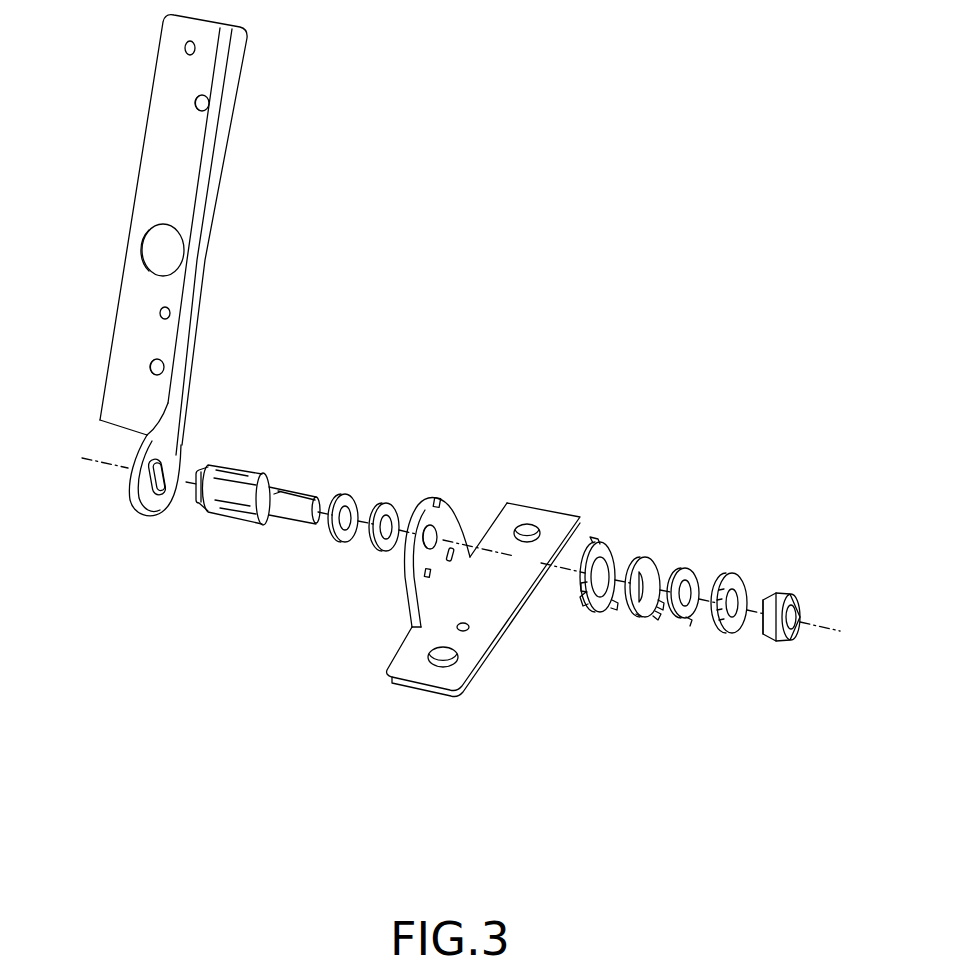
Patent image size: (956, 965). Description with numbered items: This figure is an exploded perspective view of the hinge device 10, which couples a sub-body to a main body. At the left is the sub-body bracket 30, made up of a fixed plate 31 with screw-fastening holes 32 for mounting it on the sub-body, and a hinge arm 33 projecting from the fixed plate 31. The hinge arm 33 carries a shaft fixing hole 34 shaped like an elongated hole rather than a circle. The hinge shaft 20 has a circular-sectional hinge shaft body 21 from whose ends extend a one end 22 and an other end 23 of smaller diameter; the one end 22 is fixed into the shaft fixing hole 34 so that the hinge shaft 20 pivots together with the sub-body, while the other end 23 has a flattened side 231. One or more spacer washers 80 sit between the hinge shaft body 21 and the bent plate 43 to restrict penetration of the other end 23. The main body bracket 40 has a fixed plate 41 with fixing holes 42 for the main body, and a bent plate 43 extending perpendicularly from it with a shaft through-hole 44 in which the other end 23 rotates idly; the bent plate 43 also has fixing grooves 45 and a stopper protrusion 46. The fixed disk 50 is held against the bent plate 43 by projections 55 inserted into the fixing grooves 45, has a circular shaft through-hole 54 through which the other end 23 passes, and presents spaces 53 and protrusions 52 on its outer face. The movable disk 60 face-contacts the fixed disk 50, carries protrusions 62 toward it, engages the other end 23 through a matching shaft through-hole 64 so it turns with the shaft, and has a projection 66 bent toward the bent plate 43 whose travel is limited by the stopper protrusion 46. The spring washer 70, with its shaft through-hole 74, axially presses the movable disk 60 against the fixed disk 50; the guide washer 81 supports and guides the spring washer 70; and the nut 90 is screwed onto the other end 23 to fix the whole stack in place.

The hinge device 10 is at (541, 345).
The hinge shaft 20 is at (220, 508).
The hinge shaft body 21 is at (232, 523).
The one end of hinge shaft 22 is at (197, 507).
The other end of hinge shaft 23 is at (289, 534).
The flattened side 231 is at (295, 508).
The sub-body bracket 30 is at (153, 301).
The fixed plate 31 is at (110, 417).
The screw-fastening hole 32 is at (194, 101).
The hinge arm 33 is at (150, 510).
The shaft fixing hole 34 is at (147, 495).
The main body bracket 40 is at (460, 610).
The fixed plate 41 is at (453, 686).
The fixing hole 42 is at (525, 526).
The bent plate 43 is at (426, 574).
The shaft through-hole 44 is at (436, 538).
The fixing groove 45 is at (433, 497).
The stopper protrusion 46 is at (455, 560).
The fixed disk 50 is at (593, 622).
The protrusion 52 is at (579, 604).
The space 53 is at (581, 593).
The shaft through-hole 54 is at (611, 608).
The projection 55 is at (580, 548).
The movable disk 60 is at (660, 619).
The protrusion 62 is at (640, 614).
The shaft through-hole 64 is at (662, 608).
The projection 66 is at (661, 615).
The spring washer 70 is at (708, 590).
The shaft through-hole 74 is at (690, 621).
The spacer washer 80 is at (388, 500).
The guide washer 81 is at (754, 565).
The nut 90 is at (800, 583).